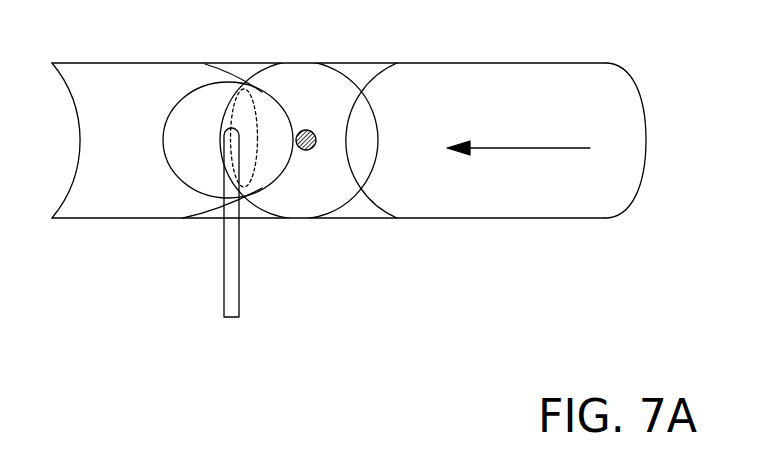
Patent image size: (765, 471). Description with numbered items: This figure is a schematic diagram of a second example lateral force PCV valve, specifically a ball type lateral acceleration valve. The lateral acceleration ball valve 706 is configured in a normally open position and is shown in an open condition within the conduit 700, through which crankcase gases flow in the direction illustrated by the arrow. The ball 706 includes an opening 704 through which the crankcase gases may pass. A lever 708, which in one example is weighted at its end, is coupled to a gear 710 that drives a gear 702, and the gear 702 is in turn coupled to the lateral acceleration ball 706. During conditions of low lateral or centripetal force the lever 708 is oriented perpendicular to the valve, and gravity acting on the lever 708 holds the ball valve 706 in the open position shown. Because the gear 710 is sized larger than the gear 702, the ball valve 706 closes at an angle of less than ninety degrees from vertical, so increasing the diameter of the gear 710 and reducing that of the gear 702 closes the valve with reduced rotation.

The conduit 700 is at (503, 63).
The gear 702 is at (306, 131).
The opening 704 is at (413, 156).
The lateral acceleration ball valve 706 is at (343, 210).
The lever 708 is at (239, 317).
The gear 710 is at (165, 132).